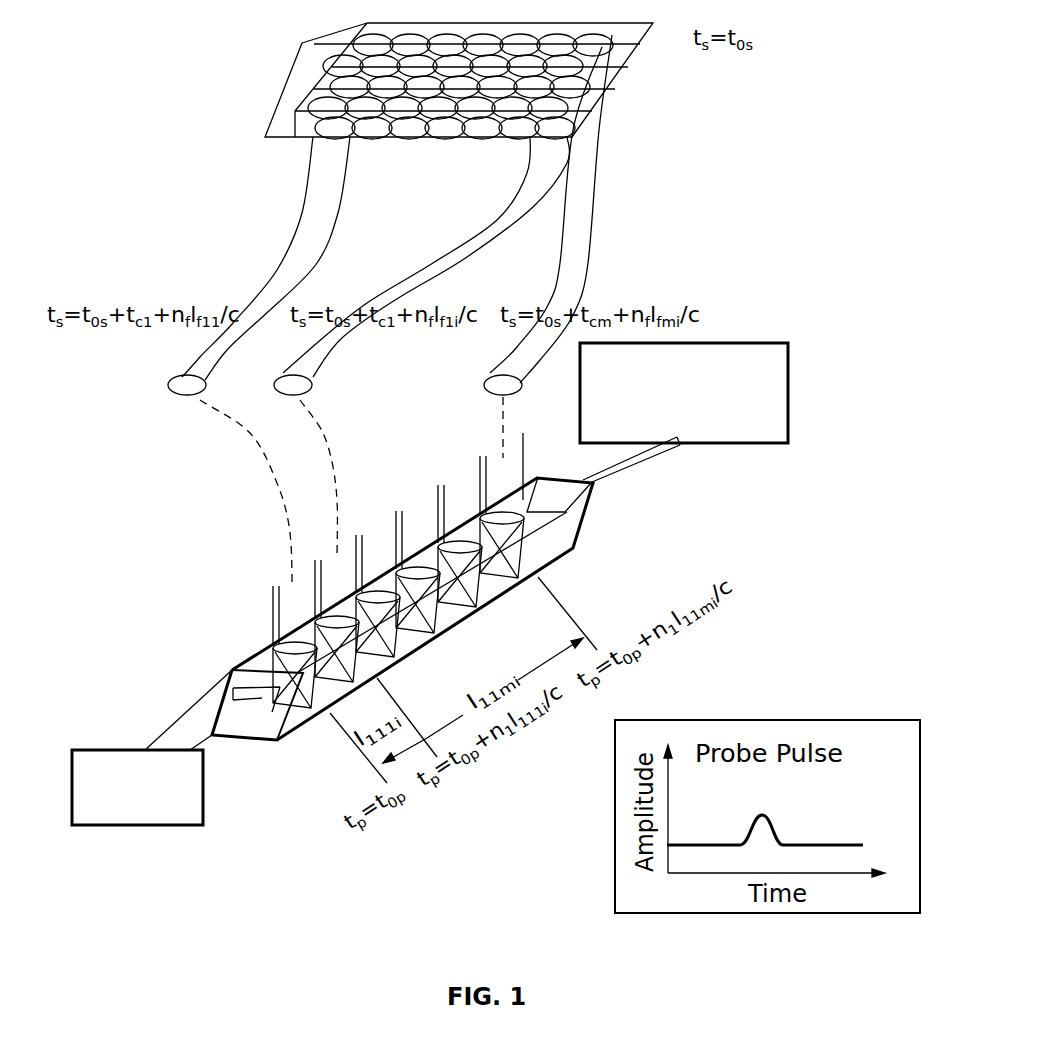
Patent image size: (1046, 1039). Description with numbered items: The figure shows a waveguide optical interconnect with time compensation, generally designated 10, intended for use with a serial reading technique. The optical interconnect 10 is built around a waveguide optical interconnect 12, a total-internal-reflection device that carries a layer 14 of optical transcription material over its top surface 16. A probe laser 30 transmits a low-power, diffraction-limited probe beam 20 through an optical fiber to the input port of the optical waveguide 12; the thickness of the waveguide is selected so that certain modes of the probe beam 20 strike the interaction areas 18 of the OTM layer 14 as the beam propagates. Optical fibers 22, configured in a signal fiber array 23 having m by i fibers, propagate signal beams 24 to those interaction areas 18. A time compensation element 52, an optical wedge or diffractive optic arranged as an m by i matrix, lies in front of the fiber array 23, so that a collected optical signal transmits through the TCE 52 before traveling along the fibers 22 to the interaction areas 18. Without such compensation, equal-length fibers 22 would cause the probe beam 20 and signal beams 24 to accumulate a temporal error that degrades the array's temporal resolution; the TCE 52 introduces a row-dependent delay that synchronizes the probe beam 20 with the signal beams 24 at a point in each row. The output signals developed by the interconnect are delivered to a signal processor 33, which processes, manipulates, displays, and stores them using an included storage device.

The optical interconnect with time compensation 10 is at (97, 510).
The waveguide optical interconnect 12 is at (250, 733).
The layer of optical transcription material 14 is at (257, 663).
The top surface 16 is at (232, 670).
The interaction areas 18 is at (298, 640).
The probe beam 20 is at (177, 738).
The optical fibers 22 is at (457, 233).
The signal fiber array 23 is at (250, 146).
The signal beams 24 is at (337, 582).
The probe laser 30 is at (167, 807).
The signal processor 33 is at (740, 435).
The time compensation element (TCE) 52 is at (305, 68).